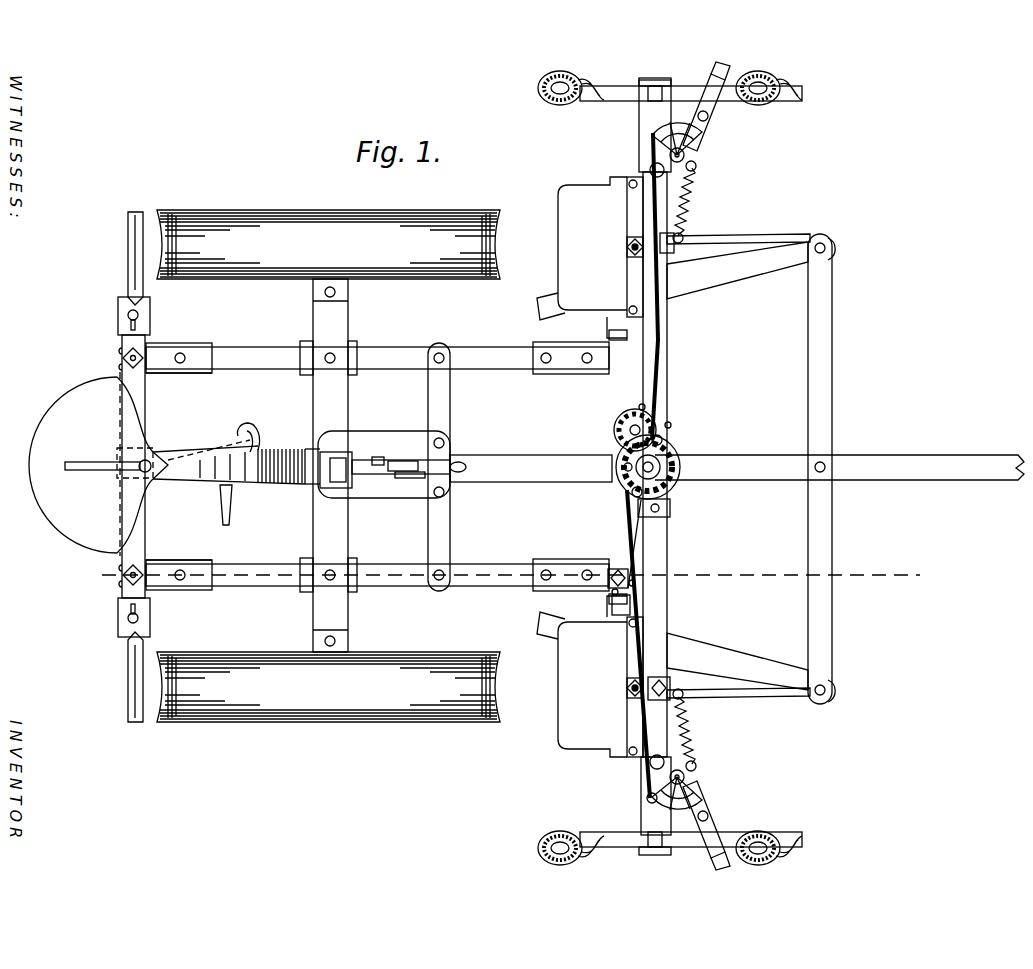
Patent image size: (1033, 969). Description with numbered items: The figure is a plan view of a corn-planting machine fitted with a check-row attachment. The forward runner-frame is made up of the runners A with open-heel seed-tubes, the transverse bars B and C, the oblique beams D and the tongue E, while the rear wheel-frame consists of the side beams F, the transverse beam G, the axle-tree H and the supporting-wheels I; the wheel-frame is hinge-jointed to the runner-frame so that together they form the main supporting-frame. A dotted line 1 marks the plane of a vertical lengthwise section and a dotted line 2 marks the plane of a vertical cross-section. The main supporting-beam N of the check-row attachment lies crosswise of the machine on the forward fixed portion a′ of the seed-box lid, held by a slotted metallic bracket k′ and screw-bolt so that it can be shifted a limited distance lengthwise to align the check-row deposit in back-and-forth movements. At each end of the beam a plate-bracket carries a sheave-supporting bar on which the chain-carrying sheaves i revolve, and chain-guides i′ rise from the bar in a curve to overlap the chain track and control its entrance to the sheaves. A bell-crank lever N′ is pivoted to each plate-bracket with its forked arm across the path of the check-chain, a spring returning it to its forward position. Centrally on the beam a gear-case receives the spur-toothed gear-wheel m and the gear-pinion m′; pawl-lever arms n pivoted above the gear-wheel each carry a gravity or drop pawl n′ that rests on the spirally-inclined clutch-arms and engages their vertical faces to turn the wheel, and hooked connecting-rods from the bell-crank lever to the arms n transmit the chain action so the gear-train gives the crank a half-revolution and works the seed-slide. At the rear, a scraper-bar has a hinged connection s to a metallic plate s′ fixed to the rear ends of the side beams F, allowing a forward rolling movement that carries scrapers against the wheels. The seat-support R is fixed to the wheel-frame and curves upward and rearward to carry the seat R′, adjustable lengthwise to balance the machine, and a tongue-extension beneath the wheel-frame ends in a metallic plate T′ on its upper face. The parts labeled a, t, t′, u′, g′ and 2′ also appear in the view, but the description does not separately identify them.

The dotted line 1 is at (505, 576).
The supporting-wheels I is at (328, 466).
The axle-tree H is at (330, 465).
The side beams F is at (377, 466).
The transverse beam G is at (439, 467).
The metallic plate T′ is at (482, 468).
The key t is at (378, 454).
The loop u′ is at (463, 467).
The seat-support R is at (229, 462).
The prong t′ is at (226, 505).
The seat R′ is at (98, 464).
The hinged connection s is at (137, 467).
The metallic plate s′ is at (179, 466).
The transverse bar C is at (648, 457).
The forward fixed portion of the lid of the seed-box a′ is at (631, 467).
The slotted metallic bracket k′ is at (632, 460).
The housing a is at (582, 467).
The spur-toothed gear-pinion m′ is at (624, 430).
The gear-wheel m is at (624, 467).
The pawl-lever arms n is at (673, 439).
The gravity or drop pawl n′ is at (628, 536).
The pin g′ is at (621, 401).
The dotted line 2 is at (679, 410).
The pin 2′ is at (603, 570).
The main supporting-beam N is at (635, 557).
The transverse bar B is at (821, 469).
The tongue E is at (839, 467).
The oblique beams D is at (737, 466).
The runners A is at (738, 468).
The chain-carrying sheaves i is at (659, 472).
The chain-guides i′ is at (690, 468).
The bell-crank lever N′ is at (688, 466).